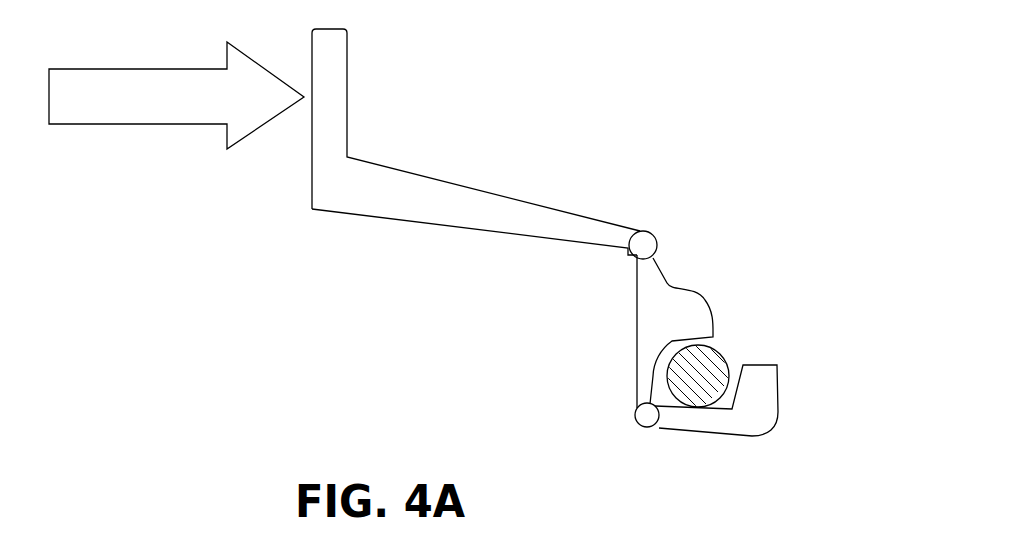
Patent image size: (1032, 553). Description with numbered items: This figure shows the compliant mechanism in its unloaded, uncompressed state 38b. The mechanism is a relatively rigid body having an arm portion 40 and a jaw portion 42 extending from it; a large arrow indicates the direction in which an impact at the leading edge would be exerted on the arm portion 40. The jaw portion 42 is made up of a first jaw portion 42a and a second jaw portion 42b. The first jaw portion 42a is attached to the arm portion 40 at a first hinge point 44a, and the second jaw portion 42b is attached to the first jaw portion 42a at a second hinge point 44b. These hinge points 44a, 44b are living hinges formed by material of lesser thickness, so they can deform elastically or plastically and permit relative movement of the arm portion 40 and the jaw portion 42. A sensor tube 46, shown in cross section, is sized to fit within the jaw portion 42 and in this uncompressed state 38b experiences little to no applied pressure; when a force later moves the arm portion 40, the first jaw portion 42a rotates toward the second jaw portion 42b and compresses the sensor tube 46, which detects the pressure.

The uncompressed state 38b is at (400, 275).
The arm portion 40 is at (333, 183).
The jaw portion 42 is at (692, 365).
The first jaw portion 42a is at (658, 315).
The second jaw portion 42b is at (763, 410).
The first hinge point 44a is at (648, 243).
The second hinge point 44b is at (643, 418).
The sensor tube 46 is at (695, 387).